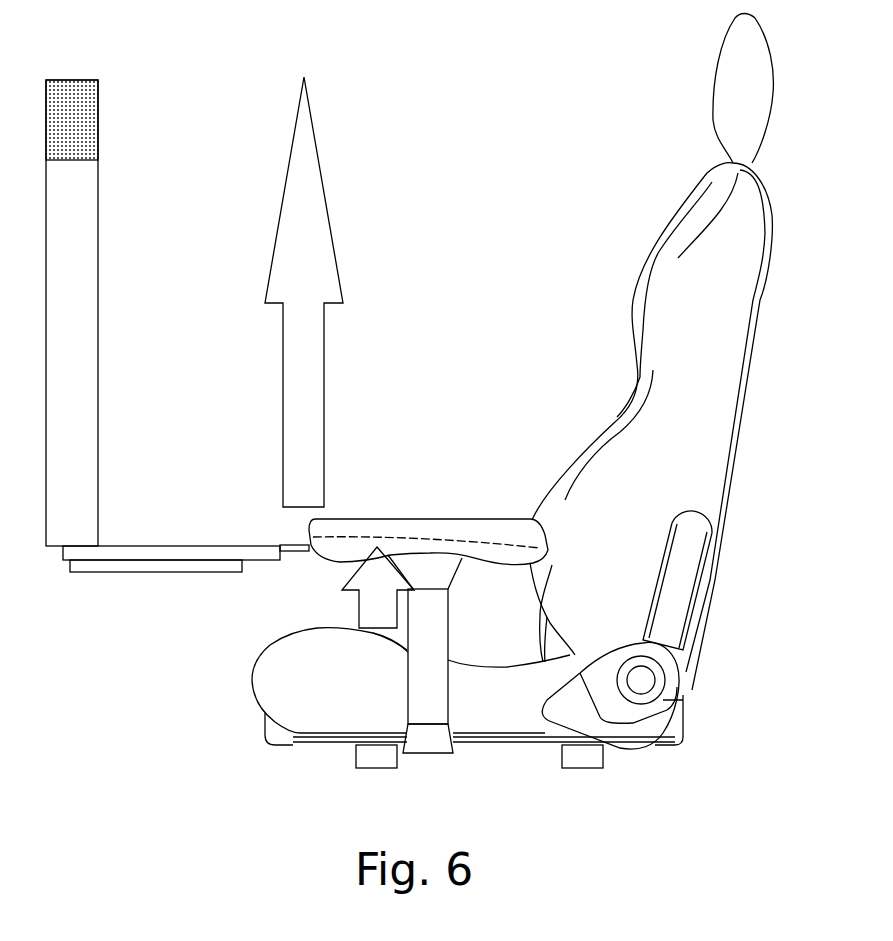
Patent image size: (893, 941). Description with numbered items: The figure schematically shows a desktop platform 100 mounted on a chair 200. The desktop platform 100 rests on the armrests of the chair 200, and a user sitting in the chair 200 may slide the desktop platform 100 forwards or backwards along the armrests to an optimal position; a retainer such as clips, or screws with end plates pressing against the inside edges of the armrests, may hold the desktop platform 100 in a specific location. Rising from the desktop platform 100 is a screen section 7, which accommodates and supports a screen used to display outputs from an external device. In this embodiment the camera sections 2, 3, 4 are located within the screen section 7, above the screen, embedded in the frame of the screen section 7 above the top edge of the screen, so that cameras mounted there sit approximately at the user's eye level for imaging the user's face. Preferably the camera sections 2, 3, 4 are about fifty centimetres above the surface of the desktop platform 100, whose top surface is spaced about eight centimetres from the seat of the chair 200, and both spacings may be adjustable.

The camera section 2 is at (126, 120).
The camera section 3 is at (126, 120).
The camera section 4 is at (82, 122).
The screen section 7 is at (126, 313).
The desktop platform 100 is at (160, 553).
The chair 200 is at (692, 265).